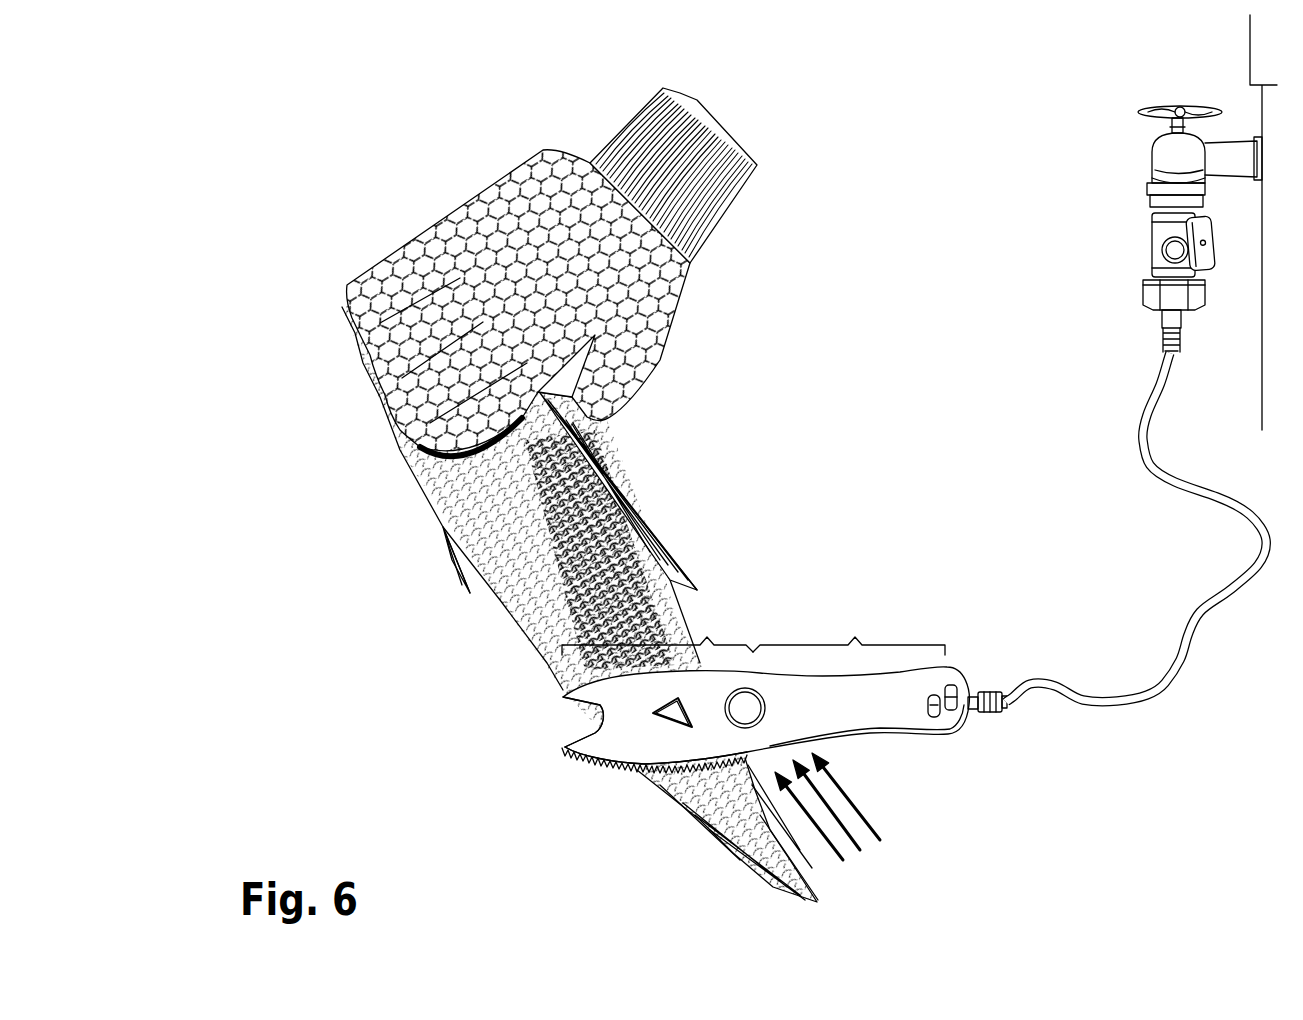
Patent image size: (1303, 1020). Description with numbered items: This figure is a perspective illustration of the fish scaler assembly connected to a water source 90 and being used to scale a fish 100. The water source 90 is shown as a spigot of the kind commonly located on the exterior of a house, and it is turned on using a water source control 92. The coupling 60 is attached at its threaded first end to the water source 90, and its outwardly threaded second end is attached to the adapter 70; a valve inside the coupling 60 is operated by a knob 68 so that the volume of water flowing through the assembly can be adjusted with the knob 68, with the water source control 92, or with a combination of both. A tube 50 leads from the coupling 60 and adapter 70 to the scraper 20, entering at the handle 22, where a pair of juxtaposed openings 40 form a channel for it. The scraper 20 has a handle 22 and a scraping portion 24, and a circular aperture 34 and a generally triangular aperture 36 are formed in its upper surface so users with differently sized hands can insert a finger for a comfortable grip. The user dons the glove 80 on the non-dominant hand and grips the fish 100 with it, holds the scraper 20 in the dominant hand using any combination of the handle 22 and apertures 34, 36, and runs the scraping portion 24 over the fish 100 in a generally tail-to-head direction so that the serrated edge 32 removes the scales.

The fish scraper 20 is at (755, 733).
The handle 22 is at (858, 678).
The scraping portion 24 is at (663, 669).
The serrated edge 32 is at (570, 753).
The circular aperture 34 is at (713, 762).
The triangular aperture 36 is at (630, 770).
The opening 40 is at (983, 683).
The tube 50 is at (1184, 624).
The coupling 60 is at (1150, 243).
The knob 68 is at (1214, 260).
The adapter 70 is at (1143, 293).
The glove 80 is at (459, 190).
The water source 90 is at (1163, 155).
The water source control 92 is at (1173, 107).
The fish 100 is at (647, 507).